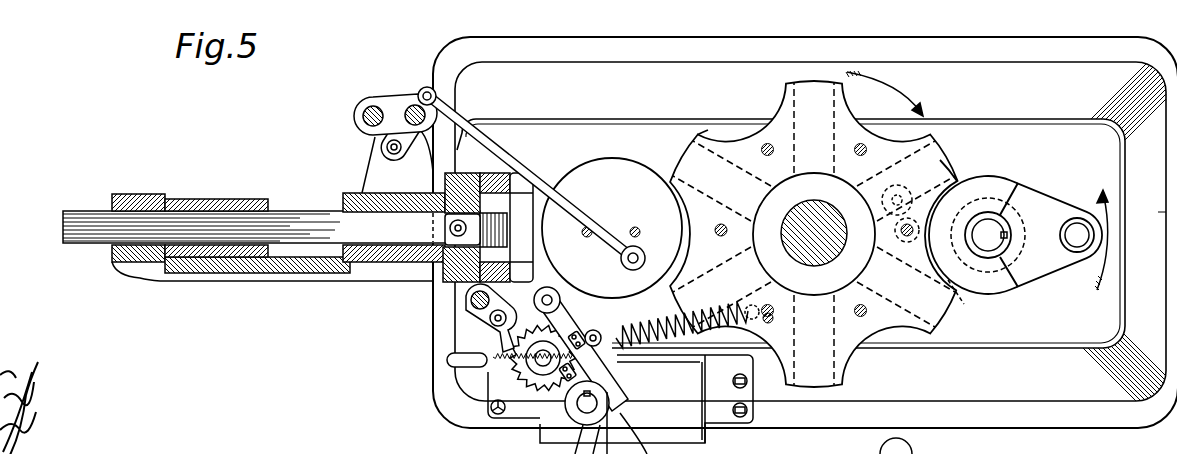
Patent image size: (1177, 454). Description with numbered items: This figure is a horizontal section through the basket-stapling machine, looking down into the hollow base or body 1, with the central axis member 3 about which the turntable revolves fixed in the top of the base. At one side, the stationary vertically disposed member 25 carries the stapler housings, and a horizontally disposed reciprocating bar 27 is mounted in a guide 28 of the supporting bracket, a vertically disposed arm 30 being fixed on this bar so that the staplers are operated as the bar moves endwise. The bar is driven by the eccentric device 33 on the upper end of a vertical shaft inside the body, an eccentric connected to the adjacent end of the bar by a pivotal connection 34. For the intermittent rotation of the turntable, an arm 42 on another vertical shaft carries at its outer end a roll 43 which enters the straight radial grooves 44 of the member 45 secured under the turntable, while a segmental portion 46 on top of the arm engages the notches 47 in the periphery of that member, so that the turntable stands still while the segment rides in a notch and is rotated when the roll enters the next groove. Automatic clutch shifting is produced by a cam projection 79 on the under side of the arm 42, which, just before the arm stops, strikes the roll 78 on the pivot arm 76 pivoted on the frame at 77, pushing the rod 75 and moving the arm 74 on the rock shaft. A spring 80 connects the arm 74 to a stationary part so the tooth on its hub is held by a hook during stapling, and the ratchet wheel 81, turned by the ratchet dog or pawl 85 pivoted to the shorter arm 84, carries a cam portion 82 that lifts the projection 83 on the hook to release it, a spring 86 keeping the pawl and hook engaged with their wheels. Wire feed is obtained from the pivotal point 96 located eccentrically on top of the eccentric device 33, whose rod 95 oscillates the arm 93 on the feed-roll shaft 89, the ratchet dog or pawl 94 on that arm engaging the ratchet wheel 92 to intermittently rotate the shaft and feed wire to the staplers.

The hollow base or body 1 is at (412, 318).
The axis member 3 is at (796, 219).
The vertically disposed member 25 is at (352, 196).
The reciprocating bar 27 is at (82, 222).
The guide 28 is at (133, 194).
The vertically disposed arm 30 is at (207, 198).
The eccentric device 33 is at (609, 178).
The pivotal connection 34 is at (449, 228).
The arm 42 is at (1049, 267).
The roll 43 is at (1075, 212).
The grooves 44 is at (792, 106).
The member 45 is at (836, 82).
The segmental portion 46 is at (994, 183).
The notches 47 is at (710, 138).
The arm 74 is at (610, 362).
The rod 75 is at (722, 336).
The pivot arm 76 is at (907, 305).
The pivot 77 is at (901, 195).
The roll 78 is at (951, 166).
The cam projection 79 is at (958, 300).
The spring 80 is at (641, 327).
The ratchet wheel 81 is at (532, 390).
The cam portion 82 is at (562, 388).
The projection 83 is at (580, 340).
The shorter arm 84 is at (483, 317).
The ratchet dog or pawl 85 is at (490, 336).
The spring 86 is at (540, 338).
The shaft 89 is at (406, 107).
The ratchet wheel 92 is at (430, 86).
The arm 93 is at (409, 107).
The ratchet dog or pawl 94 is at (372, 138).
The rod 95 is at (484, 138).
The pivotal point 96 is at (625, 262).